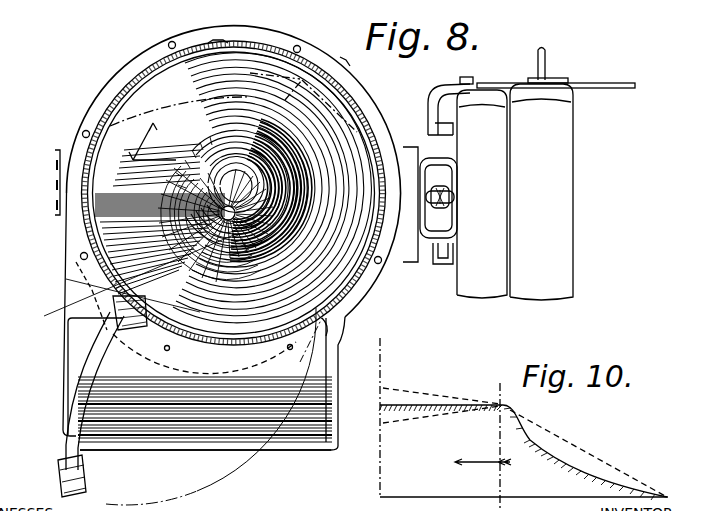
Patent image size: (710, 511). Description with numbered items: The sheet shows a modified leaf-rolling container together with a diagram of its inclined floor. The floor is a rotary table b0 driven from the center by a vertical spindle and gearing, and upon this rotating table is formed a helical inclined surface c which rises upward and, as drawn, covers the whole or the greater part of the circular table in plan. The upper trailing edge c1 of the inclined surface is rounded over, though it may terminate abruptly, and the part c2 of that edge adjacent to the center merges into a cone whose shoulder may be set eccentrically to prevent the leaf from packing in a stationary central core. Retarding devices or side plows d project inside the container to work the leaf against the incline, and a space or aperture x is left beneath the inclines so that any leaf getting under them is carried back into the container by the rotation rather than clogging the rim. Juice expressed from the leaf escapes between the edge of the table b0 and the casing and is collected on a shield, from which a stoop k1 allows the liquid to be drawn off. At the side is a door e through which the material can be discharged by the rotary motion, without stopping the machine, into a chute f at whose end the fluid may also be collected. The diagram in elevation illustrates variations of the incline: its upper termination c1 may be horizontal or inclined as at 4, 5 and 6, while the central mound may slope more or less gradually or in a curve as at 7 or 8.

In FIG. 8, the stoop k1 is at (62, 178).
In FIG. 8, the helical inclined surface c is at (196, 98).
In FIG. 8, the side plows d is at (190, 100).
In FIG. 8, the upper trailing edge c1 is at (158, 200).
In FIG. 10, the upper trailing edge c1 is at (448, 404).
In FIG. 8, the central part of trailing edge c2 is at (212, 198).
In FIG. 8, the space or aperture x is at (66, 279).
In FIG. 8, the rotary table b0 is at (87, 396).
In FIG. 8, the door e is at (160, 391).
In FIG. 8, the chute f is at (193, 436).
In FIG. 10, the inclined termination line 4 is at (432, 391).
In FIG. 10, the inclined termination line 5 is at (515, 448).
In FIG. 10, the inclined termination line 6 is at (432, 420).
In FIG. 10, the central mound slope 7 is at (519, 423).
In FIG. 10, the central mound slope 8 is at (608, 468).